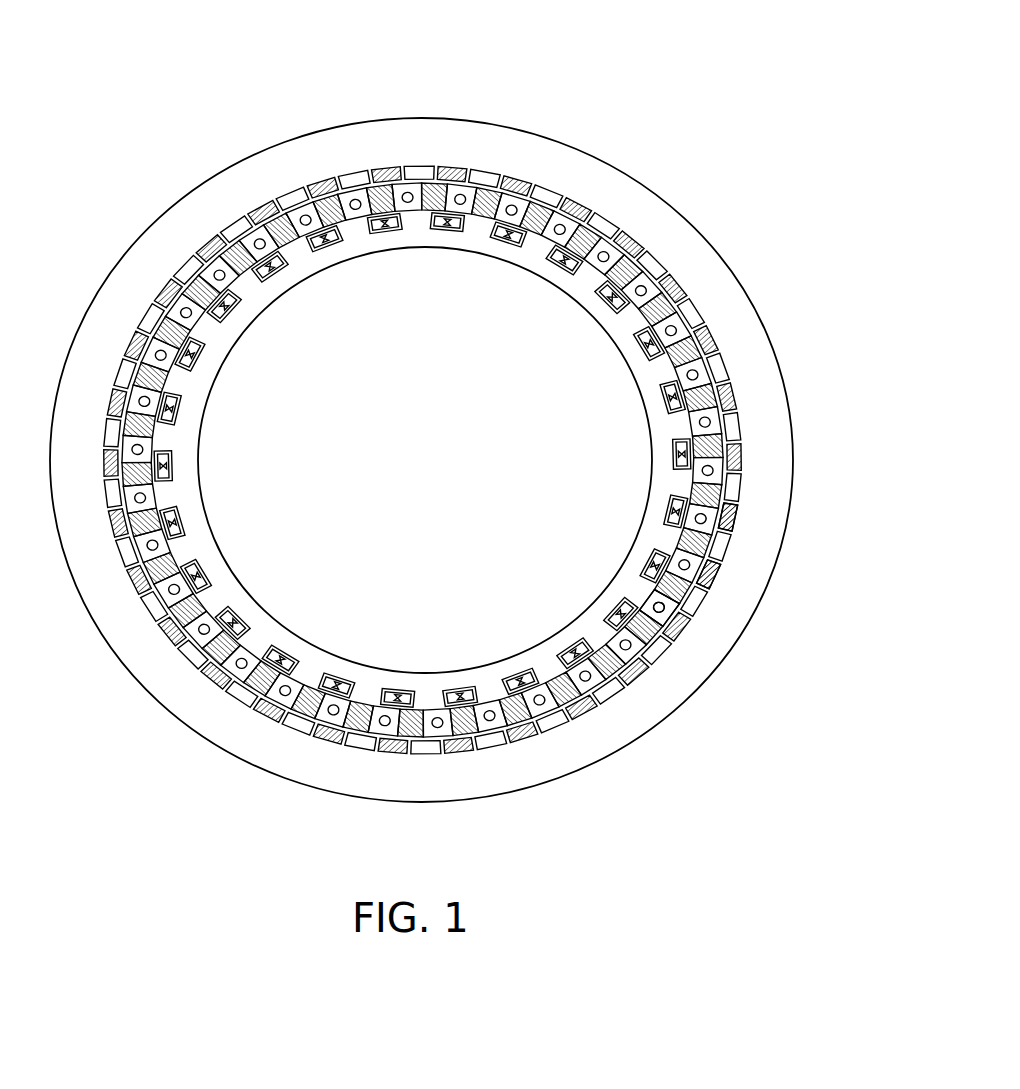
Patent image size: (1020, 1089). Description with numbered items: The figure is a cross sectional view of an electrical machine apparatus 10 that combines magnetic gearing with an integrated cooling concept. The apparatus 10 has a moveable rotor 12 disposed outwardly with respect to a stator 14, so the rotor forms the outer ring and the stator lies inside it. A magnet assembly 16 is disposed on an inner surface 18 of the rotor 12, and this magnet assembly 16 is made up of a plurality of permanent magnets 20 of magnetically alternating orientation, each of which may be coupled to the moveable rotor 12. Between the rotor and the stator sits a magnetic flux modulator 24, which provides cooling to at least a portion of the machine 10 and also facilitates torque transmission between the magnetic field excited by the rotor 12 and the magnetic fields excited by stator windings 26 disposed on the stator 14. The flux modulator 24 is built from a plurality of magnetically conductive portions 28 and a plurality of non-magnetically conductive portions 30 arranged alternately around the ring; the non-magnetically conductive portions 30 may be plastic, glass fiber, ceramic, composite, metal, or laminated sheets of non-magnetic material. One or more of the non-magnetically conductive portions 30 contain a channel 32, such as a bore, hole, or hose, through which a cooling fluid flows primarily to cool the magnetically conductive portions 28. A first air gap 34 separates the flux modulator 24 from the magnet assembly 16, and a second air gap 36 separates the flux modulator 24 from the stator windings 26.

The electrical machine apparatus 10 is at (732, 63).
The moveable rotor 12 is at (753, 328).
The stator 14 is at (486, 243).
The magnet assembly 16 is at (612, 216).
The inner surface 18 is at (742, 430).
The permanent magnets 20 is at (717, 580).
The magnetic flux modulator 24 is at (688, 618).
The stator windings 26 is at (230, 627).
The magnetically conductive portions 28 is at (635, 682).
The non-magnetically conductive portions 30 is at (558, 725).
The channel 32 is at (492, 713).
The first air gap 34 is at (362, 733).
The second air gap 36 is at (282, 662).